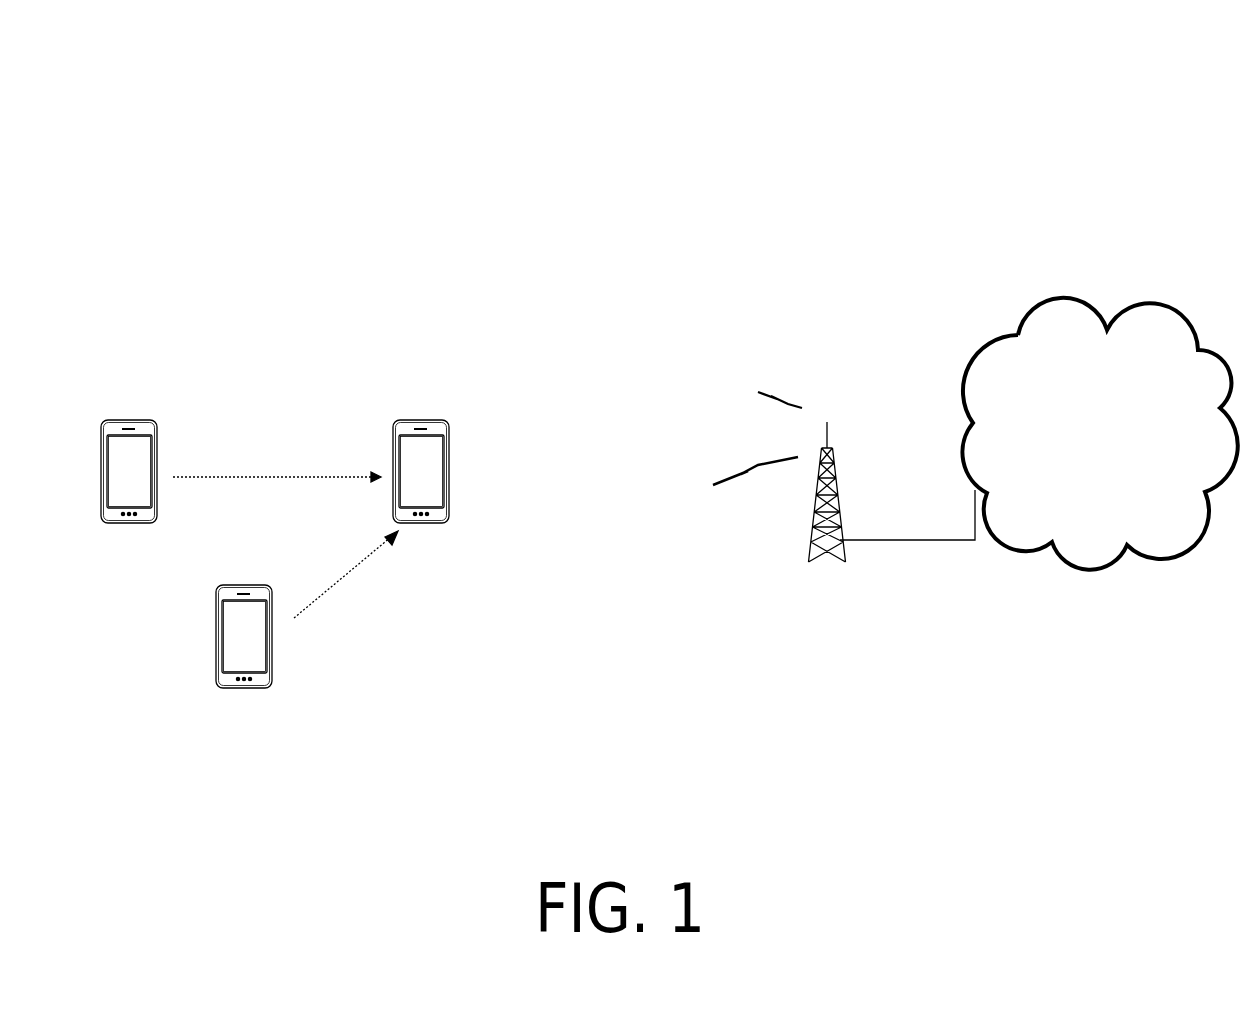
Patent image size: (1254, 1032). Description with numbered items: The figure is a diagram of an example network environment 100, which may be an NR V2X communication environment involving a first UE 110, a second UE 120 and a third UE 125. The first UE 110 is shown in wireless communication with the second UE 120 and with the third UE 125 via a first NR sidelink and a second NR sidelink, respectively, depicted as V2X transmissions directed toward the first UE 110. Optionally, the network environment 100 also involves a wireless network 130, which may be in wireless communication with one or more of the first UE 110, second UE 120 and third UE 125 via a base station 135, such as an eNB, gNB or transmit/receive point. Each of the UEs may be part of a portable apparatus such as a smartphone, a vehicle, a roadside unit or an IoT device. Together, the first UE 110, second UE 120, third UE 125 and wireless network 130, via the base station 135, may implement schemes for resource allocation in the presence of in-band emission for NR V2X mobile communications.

The network environment 100 is at (607, 50).
The first UE 110 is at (420, 420).
The second UE 120 is at (128, 420).
The third UE 125 is at (242, 585).
The wireless network 130 is at (1080, 459).
The base station 135 is at (836, 512).